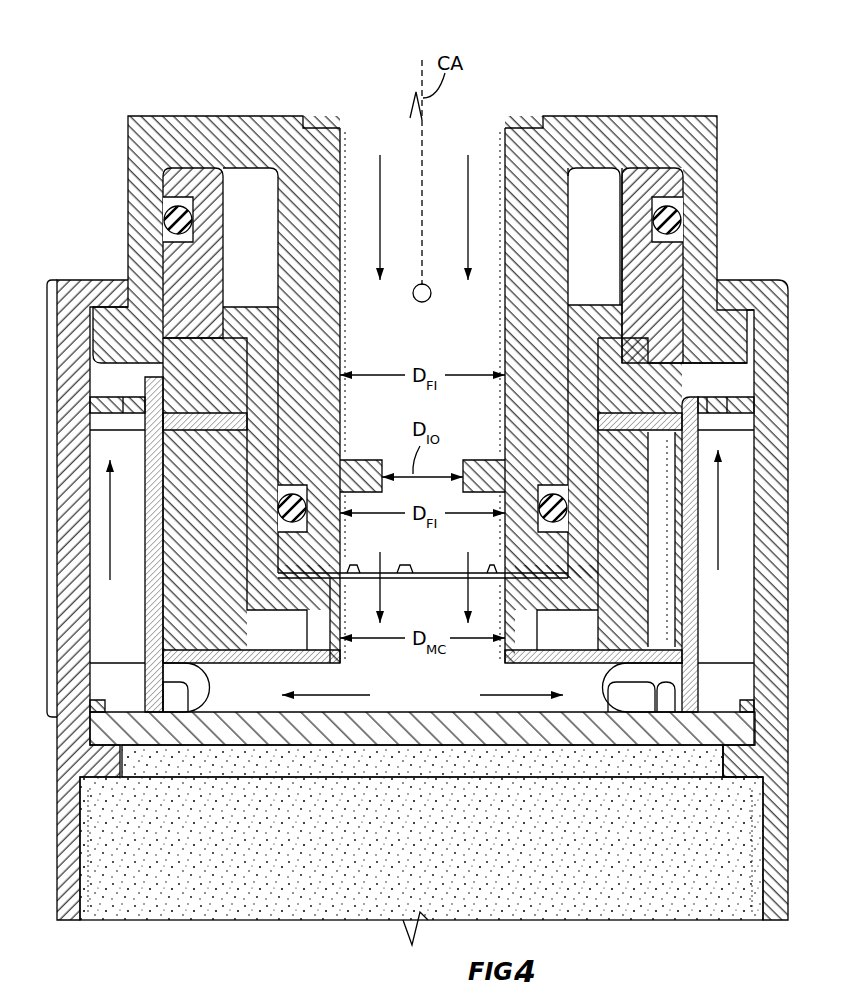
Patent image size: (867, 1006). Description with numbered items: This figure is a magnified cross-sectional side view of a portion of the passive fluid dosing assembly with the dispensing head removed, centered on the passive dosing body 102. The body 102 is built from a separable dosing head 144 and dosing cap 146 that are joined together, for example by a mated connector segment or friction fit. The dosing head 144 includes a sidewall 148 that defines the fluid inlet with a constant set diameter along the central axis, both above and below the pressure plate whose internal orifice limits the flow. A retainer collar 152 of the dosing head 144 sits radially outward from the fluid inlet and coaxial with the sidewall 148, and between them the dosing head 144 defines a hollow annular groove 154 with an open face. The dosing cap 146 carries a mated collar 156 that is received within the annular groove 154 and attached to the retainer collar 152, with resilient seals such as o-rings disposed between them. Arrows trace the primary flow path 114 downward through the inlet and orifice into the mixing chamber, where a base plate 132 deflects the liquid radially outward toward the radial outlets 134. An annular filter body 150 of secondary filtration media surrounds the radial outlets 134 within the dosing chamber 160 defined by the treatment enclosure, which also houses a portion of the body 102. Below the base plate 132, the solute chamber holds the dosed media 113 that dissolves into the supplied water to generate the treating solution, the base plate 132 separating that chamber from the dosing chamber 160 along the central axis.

The passive dosing body 102 is at (577, 105).
The dosed media 113 is at (135, 805).
The primary flow path 114 is at (386, 172).
The base plate 132 is at (625, 725).
The radial outlet 134 is at (667, 697).
The dosing head 144 is at (273, 115).
The dosing cap 146 is at (590, 406).
The sidewall 148 is at (538, 273).
The filter body 150 is at (733, 628).
The retainer collar 152 is at (700, 208).
The annular groove 154 is at (225, 163).
The mated collar 156 is at (653, 267).
The dosing chamber 160 is at (47, 541).